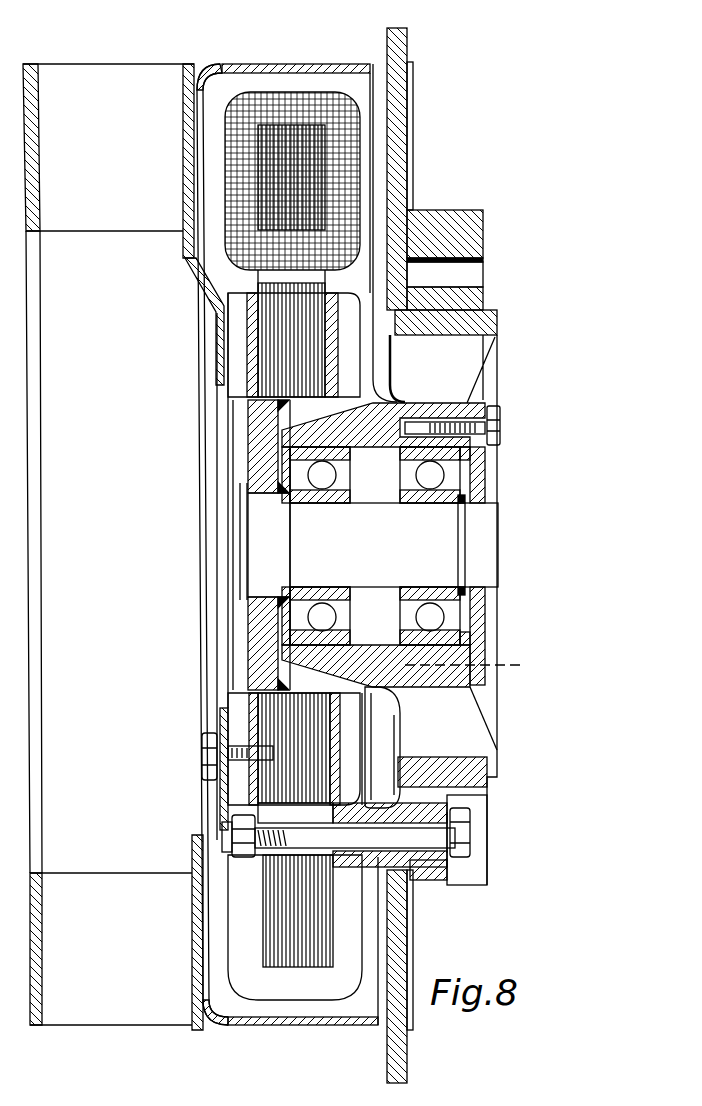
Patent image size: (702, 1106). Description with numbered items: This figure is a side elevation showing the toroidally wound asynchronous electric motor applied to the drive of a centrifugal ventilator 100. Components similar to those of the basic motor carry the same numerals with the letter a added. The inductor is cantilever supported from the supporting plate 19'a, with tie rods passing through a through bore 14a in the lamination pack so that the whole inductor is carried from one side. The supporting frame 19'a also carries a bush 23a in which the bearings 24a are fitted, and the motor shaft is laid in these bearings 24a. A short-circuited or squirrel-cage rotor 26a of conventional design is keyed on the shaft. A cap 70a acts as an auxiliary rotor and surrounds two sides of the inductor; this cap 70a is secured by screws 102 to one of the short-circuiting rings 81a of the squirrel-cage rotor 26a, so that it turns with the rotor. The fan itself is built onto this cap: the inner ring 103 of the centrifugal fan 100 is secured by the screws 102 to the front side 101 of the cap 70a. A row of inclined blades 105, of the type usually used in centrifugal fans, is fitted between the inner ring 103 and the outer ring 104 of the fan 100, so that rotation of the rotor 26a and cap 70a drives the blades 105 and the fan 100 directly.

The through bore 14a is at (438, 840).
The supporting plate 19'a is at (470, 267).
The bush 23a is at (392, 416).
The bearings 24a is at (462, 476).
The squirrel-cage rotor 26a is at (380, 733).
The cap 70a is at (343, 62).
The short-circuiting ring 81a is at (447, 778).
The centrifugal ventilator 100 is at (172, 1032).
The front side 101 is at (203, 105).
The screws 102 is at (217, 778).
The inner ring 103 is at (186, 64).
The outer ring 104 is at (33, 1028).
The inclined blades 105 is at (70, 873).